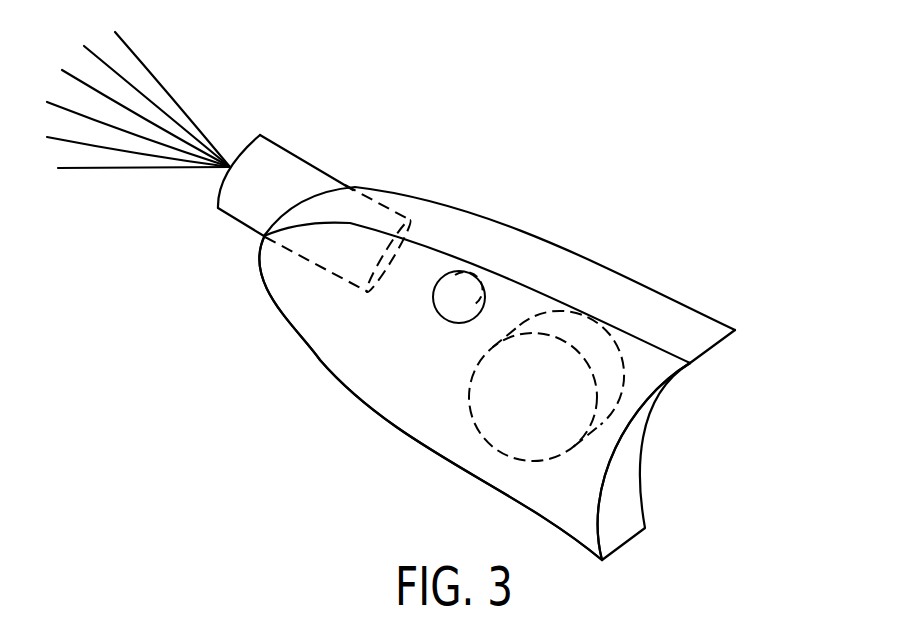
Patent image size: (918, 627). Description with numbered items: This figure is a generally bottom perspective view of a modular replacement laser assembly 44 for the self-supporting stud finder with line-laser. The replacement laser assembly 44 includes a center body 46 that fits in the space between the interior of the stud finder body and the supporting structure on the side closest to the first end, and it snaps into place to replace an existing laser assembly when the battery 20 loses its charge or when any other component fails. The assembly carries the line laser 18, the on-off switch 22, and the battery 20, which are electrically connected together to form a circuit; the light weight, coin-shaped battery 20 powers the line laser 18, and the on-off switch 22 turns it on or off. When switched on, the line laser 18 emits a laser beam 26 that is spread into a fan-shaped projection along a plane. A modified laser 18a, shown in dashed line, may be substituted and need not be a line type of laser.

The line laser 18 is at (287, 162).
The modified laser 18a is at (345, 185).
The battery 20 is at (617, 342).
The on-off switch 22 is at (487, 282).
The laser beam 26 is at (177, 100).
The replacement laser assembly 44 is at (307, 382).
The center body 46 is at (418, 395).